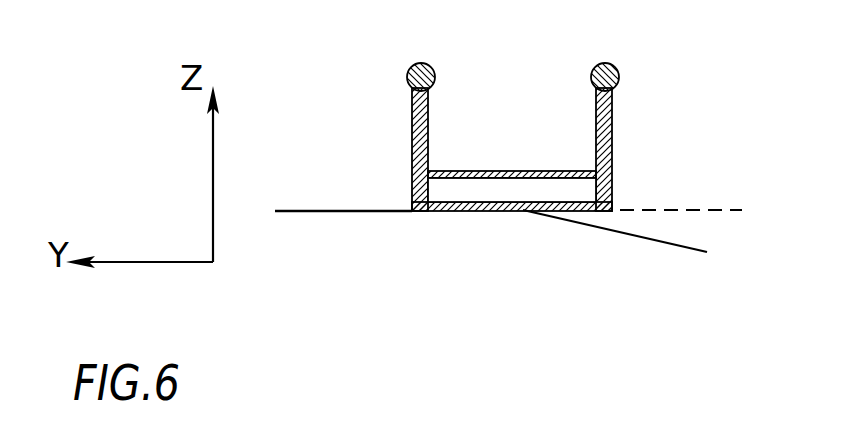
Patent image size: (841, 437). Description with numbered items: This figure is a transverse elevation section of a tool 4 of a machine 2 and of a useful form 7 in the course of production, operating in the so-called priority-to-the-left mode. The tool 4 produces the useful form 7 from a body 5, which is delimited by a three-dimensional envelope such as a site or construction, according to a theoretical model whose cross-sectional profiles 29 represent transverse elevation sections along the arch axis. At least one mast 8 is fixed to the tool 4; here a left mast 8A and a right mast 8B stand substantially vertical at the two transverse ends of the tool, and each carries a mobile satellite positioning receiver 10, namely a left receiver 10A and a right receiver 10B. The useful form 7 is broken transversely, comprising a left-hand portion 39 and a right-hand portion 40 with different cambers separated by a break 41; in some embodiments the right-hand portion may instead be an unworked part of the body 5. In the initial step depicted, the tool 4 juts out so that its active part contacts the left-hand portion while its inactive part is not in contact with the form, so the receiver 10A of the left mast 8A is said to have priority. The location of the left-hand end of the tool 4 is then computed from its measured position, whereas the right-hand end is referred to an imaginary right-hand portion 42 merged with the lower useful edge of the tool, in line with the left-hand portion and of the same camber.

The machine 2 is at (478, 158).
The tool 4 is at (478, 158).
The body 5 is at (503, 247).
The useful form 7 is at (366, 248).
The mast 8 is at (478, 158).
The left mast 8A is at (431, 147).
The right mast 8B is at (621, 137).
The mobile receiver 10 is at (350, 104).
The left mobile receiver 10A is at (437, 76).
The right mobile receiver 10B is at (628, 72).
The cross-sectional profile 29 is at (574, 238).
The left-hand portion of the useful form 39 is at (335, 210).
The right-hand portion of the useful form 40 is at (632, 237).
The break 41 is at (512, 220).
The imaginary right-hand portion 42 is at (630, 210).